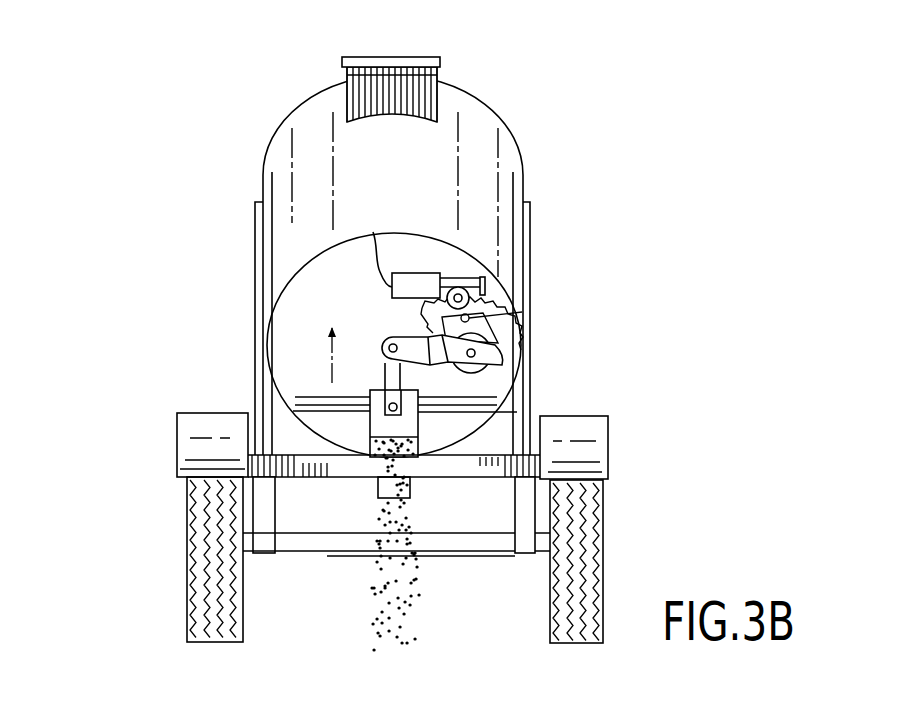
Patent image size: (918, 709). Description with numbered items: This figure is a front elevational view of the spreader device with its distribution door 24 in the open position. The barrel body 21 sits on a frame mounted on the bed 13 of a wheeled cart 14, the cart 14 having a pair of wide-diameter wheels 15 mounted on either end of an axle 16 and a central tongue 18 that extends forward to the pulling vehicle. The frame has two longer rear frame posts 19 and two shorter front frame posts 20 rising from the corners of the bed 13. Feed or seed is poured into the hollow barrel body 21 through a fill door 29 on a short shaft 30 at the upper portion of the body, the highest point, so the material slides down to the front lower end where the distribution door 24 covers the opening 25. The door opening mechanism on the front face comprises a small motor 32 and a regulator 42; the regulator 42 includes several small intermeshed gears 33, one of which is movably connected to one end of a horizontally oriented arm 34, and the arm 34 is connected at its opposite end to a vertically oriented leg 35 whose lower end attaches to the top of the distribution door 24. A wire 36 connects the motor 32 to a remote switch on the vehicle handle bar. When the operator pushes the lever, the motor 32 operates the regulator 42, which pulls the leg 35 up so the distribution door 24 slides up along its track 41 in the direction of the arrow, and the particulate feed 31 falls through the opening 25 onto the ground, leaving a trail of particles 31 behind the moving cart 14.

The bed 13 is at (276, 471).
The wheeled cart 14 is at (170, 500).
The wheels 15 is at (205, 600).
The axle 16 is at (330, 551).
The central tongue 18 is at (400, 493).
The rear frame posts 19 is at (525, 212).
The front frame posts 20 is at (263, 328).
The barrel body 21 is at (405, 190).
The distribution door 24 is at (410, 427).
The opening 25 is at (412, 455).
The fill door 29 is at (434, 57).
The short shaft 30 is at (424, 91).
The particulate feed 31 is at (395, 605).
The motor 32 is at (415, 283).
The intermeshed gears 33 is at (470, 300).
The arm 34 is at (495, 358).
The leg 35 is at (383, 385).
The wire 36 is at (380, 268).
The track 41 is at (297, 397).
The regulator 42 is at (513, 323).